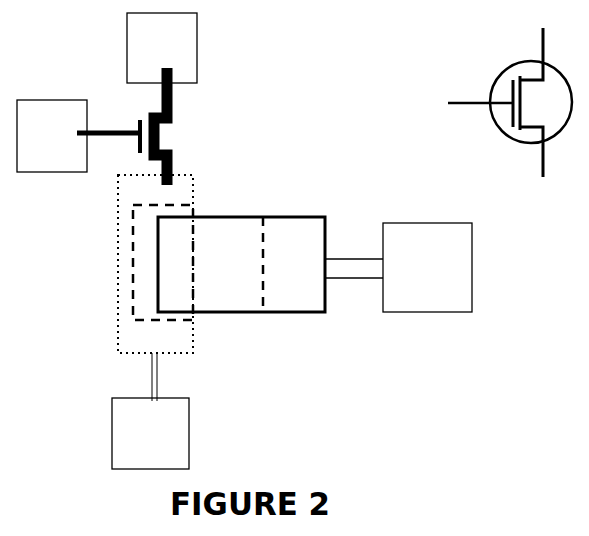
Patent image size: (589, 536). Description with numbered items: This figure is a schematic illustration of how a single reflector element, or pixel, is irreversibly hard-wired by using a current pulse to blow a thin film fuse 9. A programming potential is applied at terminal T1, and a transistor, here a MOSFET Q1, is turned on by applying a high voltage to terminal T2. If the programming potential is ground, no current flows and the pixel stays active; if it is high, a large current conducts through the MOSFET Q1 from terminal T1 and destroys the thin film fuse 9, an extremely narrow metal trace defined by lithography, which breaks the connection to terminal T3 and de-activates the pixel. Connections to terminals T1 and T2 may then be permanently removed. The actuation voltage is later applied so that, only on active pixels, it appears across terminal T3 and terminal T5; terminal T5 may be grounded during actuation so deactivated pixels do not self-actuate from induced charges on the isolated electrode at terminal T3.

The thin film fuse 9 is at (168, 375).
The terminal T1 is at (162, 48).
The terminal T2 is at (77, 136).
The terminal T3 is at (207, 264).
The terminal T5 is at (292, 346).
The MOSFET Q1 is at (356, 105).